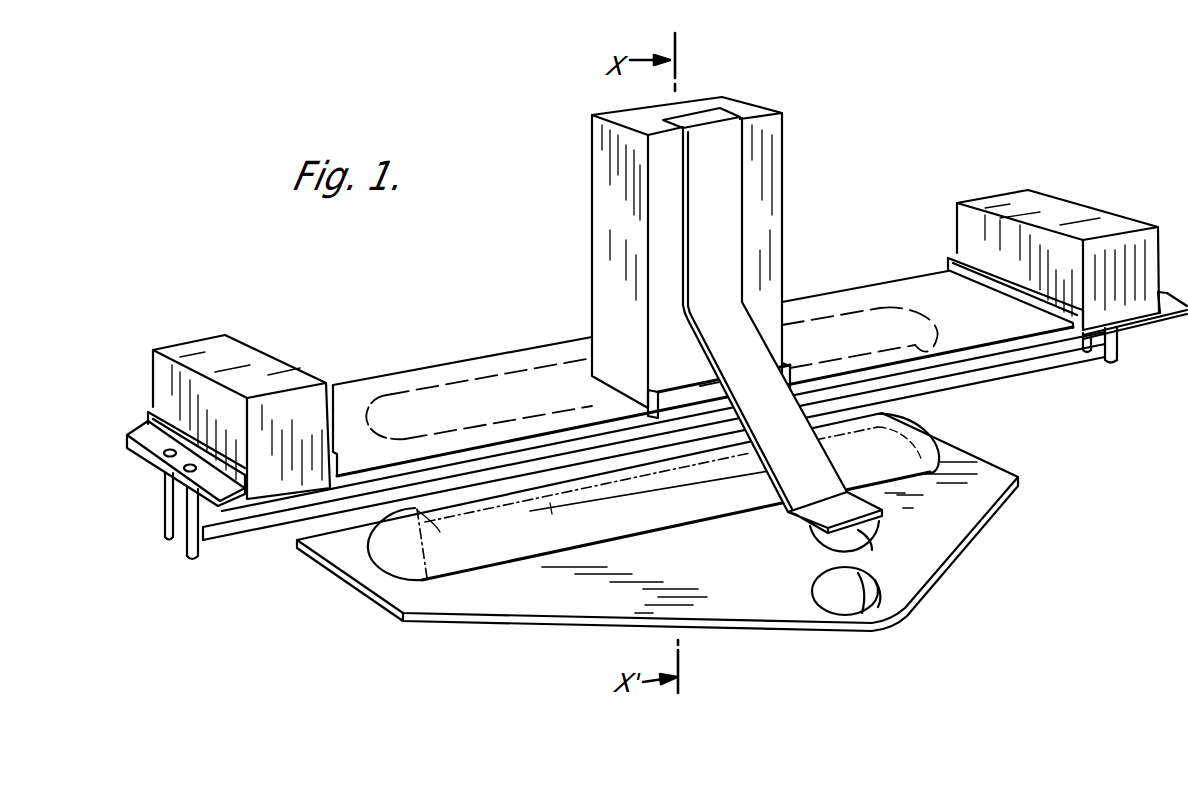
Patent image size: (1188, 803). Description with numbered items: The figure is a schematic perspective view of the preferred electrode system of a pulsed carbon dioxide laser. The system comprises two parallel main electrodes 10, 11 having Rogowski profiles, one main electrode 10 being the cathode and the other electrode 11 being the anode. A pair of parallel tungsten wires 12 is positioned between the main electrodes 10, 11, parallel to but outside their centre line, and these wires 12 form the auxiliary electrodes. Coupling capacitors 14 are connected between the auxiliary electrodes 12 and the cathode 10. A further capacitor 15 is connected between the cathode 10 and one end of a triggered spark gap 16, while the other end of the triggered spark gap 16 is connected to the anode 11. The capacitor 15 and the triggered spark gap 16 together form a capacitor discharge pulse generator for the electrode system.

The main electrode (cathode) 10 is at (500, 383).
The main electrode (anode) 11 is at (515, 553).
The tungsten wires 12 is at (258, 545).
The coupling capacitors 14 is at (187, 345).
The further capacitor 15 is at (573, 233).
The triggered spark gap 16 is at (856, 559).